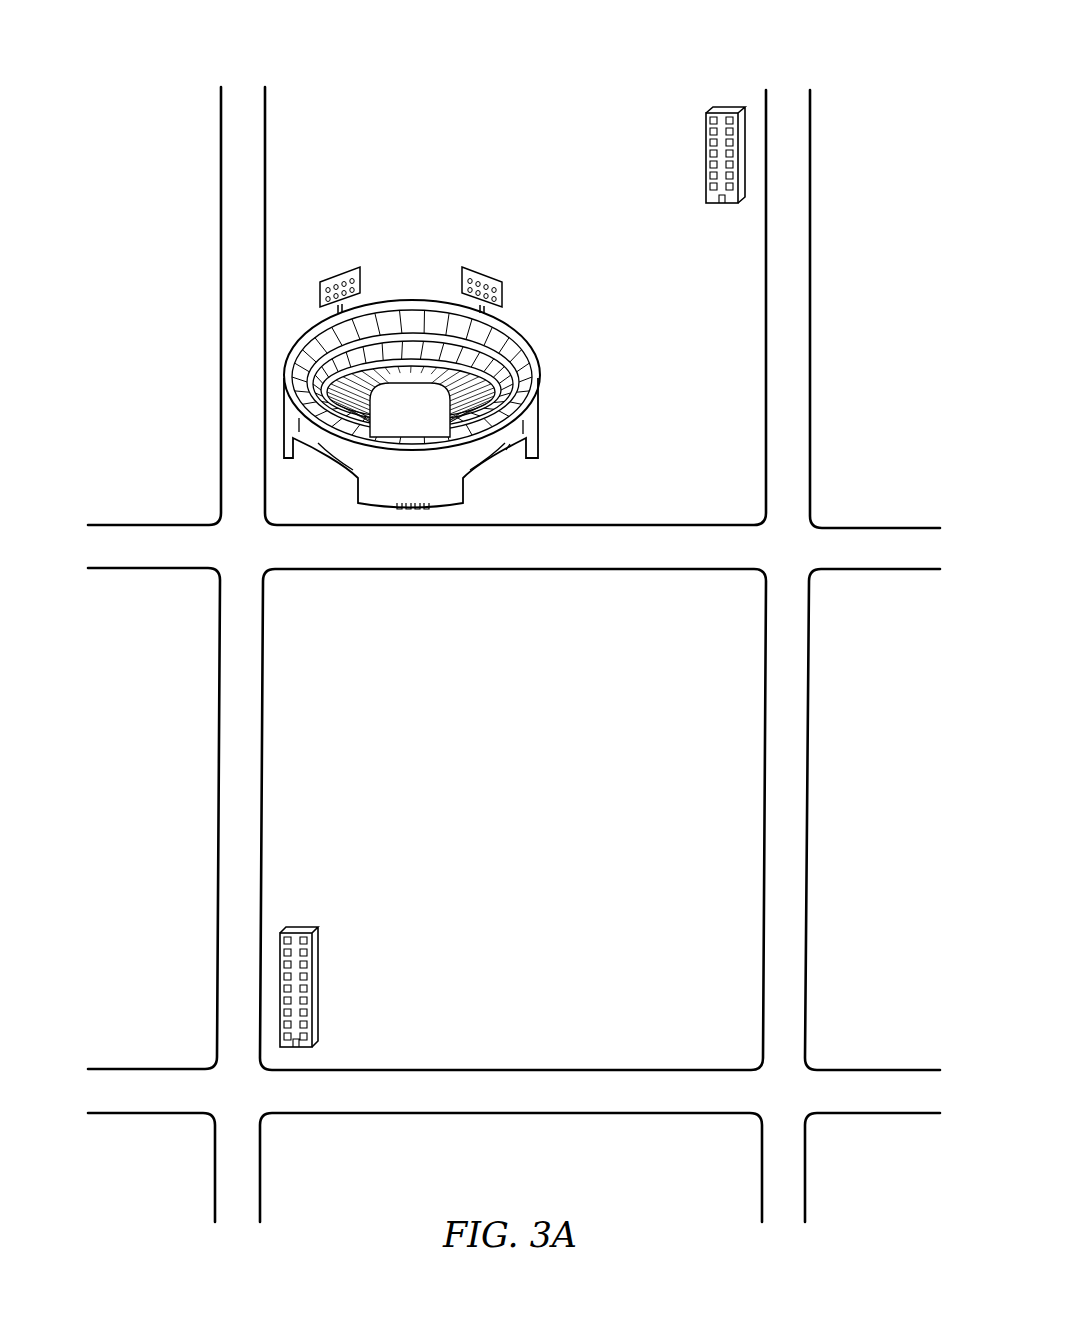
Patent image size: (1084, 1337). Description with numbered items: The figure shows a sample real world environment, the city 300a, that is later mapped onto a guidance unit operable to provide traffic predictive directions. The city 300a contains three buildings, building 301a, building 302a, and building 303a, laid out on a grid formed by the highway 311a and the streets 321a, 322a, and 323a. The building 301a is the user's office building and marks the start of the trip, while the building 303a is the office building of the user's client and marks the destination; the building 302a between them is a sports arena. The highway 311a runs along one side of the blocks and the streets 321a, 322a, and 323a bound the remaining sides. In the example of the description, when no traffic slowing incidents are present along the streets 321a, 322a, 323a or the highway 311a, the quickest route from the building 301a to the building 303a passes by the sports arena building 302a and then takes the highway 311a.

The city 300a is at (380, 64).
The building 301a is at (706, 158).
The building 302a is at (413, 300).
The building 303a is at (313, 985).
The highway 311a is at (237, 801).
The street 321a is at (640, 548).
The street 322a is at (787, 801).
The street 323a is at (553, 1092).